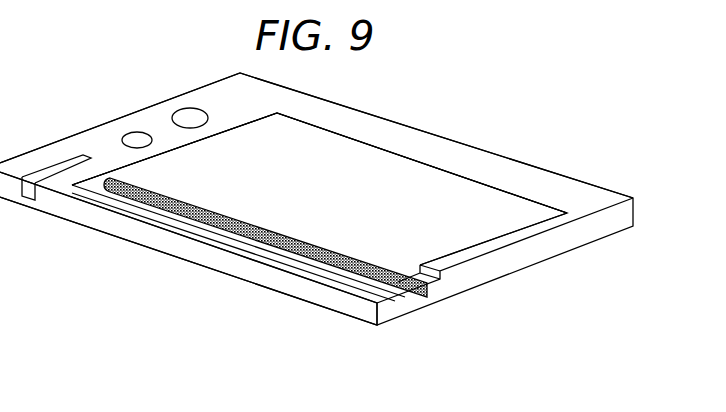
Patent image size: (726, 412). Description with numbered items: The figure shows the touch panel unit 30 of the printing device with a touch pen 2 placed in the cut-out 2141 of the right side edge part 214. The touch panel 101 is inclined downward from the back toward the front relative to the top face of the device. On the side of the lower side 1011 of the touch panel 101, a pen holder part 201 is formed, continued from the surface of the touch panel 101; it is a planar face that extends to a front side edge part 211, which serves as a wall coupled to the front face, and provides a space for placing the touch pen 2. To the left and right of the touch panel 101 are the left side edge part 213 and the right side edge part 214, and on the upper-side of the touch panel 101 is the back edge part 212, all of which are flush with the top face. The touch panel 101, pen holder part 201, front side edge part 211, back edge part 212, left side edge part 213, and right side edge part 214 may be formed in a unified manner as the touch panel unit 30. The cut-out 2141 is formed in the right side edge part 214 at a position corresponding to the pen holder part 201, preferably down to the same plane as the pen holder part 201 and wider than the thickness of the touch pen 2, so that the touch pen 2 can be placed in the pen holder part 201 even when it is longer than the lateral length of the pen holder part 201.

The touch panel unit 30 is at (562, 112).
The back edge part 212 is at (400, 133).
The left side edge part 213 is at (95, 142).
The right side edge part 214 is at (472, 260).
The cut-out 2141 is at (432, 291).
The touch pen 2 is at (153, 197).
The pen holder part 201 is at (135, 205).
The front side edge part 211 is at (210, 234).
The touch panel 101 is at (263, 150).
The lower side 1011 is at (333, 283).